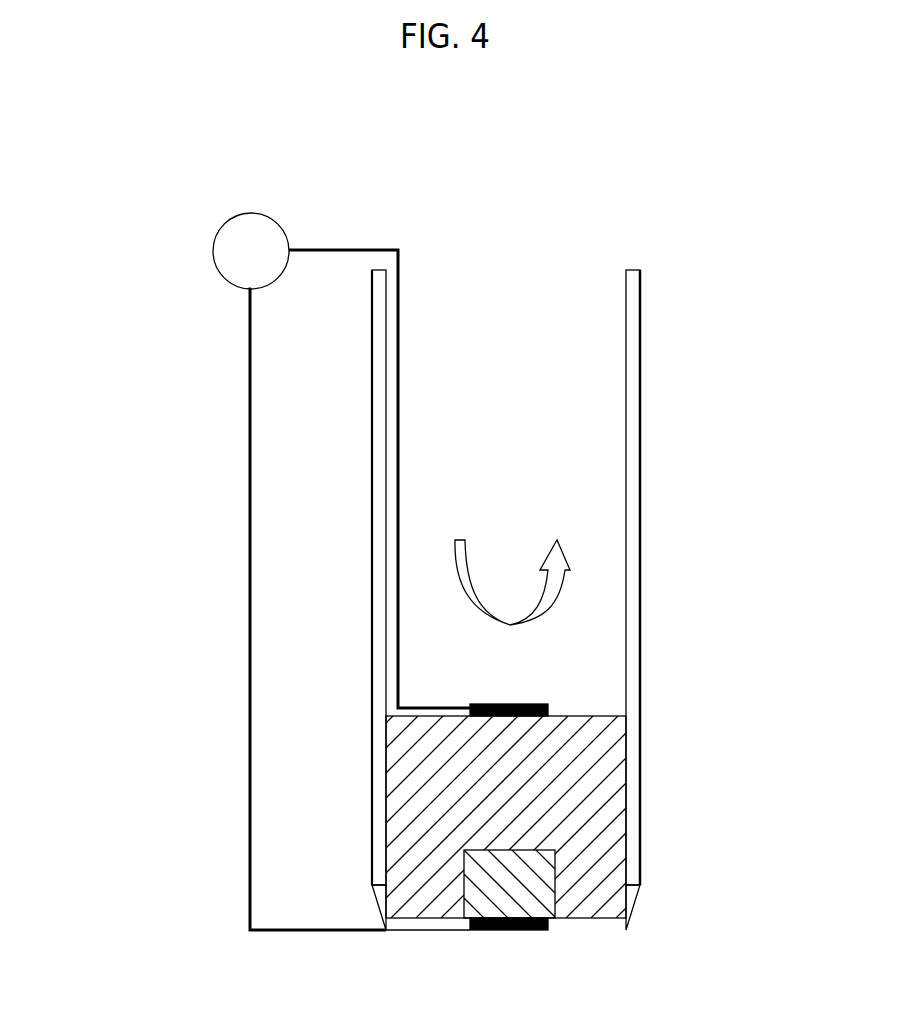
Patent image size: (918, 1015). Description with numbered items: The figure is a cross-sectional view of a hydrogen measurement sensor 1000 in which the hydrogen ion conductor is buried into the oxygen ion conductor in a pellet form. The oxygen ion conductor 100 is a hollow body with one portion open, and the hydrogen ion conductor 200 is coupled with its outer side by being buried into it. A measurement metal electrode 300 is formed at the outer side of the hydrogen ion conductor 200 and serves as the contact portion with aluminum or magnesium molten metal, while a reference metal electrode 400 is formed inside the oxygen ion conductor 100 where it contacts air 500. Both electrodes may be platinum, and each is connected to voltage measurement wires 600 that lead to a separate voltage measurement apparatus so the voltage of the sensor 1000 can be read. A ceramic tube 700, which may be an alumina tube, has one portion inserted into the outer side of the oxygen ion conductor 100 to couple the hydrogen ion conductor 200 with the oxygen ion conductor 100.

The hydrogen measurement sensor 1000 is at (635, 184).
The oxygen ion conductor 100 is at (590, 777).
The hydrogen ion conductor 200 is at (535, 882).
The measurement metal electrode 300 is at (540, 932).
The reference metal electrode 400 is at (525, 705).
The air 500 is at (597, 456).
The voltage measurement wires 600 is at (360, 250).
The ceramic tube 700 is at (640, 389).